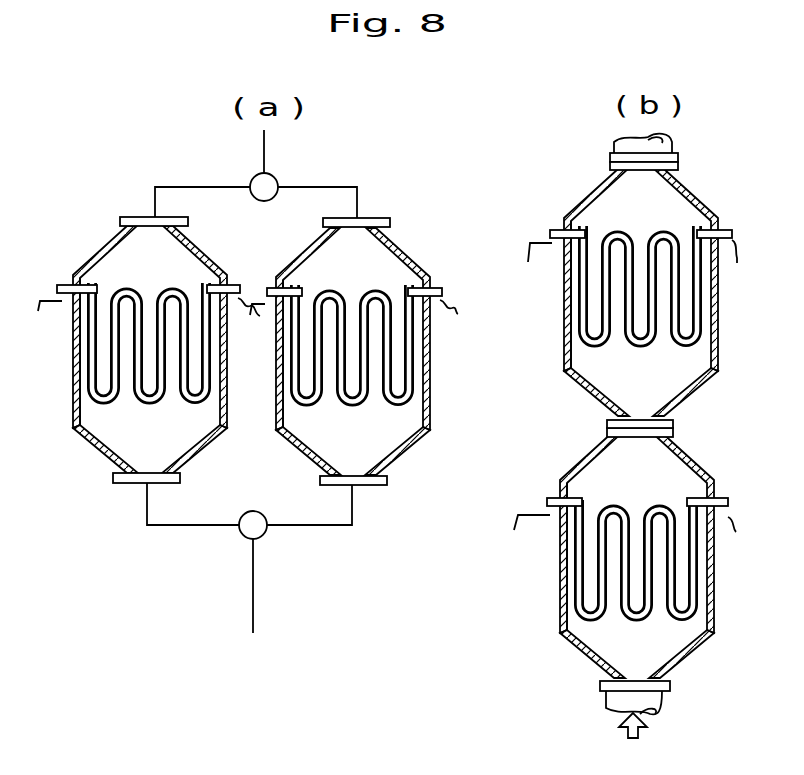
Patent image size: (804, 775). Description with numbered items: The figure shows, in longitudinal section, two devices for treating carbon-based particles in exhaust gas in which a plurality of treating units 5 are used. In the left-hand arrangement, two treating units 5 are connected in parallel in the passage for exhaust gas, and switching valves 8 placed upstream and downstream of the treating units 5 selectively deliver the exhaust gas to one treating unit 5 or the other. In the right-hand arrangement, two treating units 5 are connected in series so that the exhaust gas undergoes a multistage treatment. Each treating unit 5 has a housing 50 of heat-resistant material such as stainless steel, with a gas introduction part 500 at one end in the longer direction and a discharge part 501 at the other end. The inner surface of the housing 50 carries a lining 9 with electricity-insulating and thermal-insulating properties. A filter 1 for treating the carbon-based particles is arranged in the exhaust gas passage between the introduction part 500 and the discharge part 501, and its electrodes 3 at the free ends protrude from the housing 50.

The filter 1 is at (92, 327).
The electrodes 3 is at (64, 287).
The treating unit 5 is at (77, 378).
The switching valves 8 is at (253, 180).
The lining 9 is at (80, 440).
The housing 50 is at (110, 460).
The gas introduction part 500 is at (137, 470).
The discharge part 501 is at (151, 231).